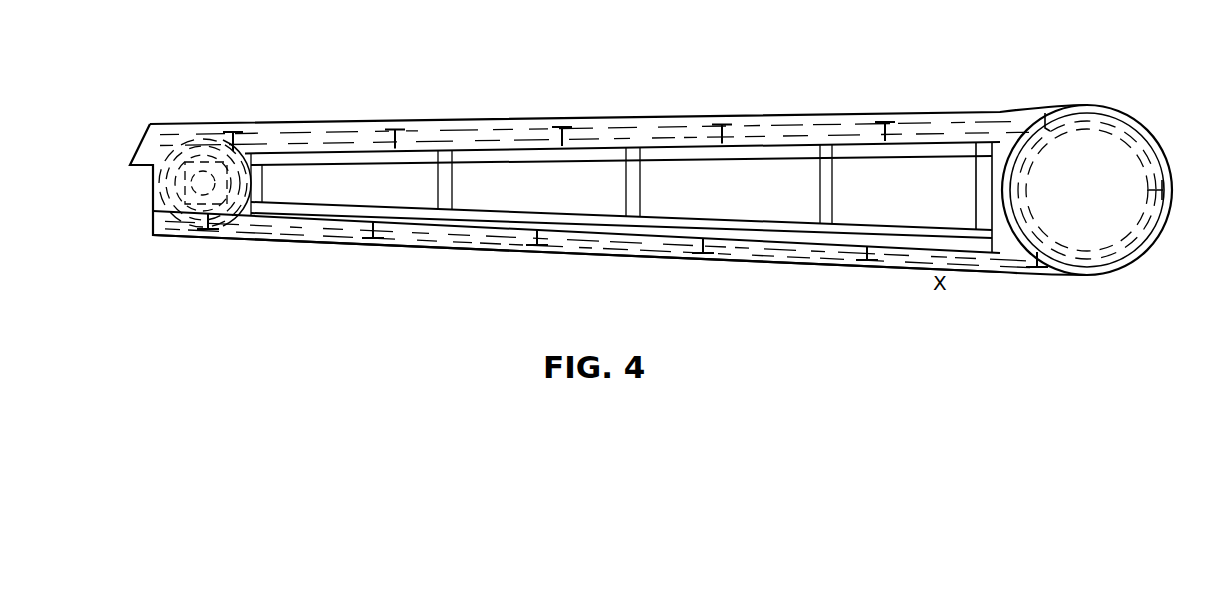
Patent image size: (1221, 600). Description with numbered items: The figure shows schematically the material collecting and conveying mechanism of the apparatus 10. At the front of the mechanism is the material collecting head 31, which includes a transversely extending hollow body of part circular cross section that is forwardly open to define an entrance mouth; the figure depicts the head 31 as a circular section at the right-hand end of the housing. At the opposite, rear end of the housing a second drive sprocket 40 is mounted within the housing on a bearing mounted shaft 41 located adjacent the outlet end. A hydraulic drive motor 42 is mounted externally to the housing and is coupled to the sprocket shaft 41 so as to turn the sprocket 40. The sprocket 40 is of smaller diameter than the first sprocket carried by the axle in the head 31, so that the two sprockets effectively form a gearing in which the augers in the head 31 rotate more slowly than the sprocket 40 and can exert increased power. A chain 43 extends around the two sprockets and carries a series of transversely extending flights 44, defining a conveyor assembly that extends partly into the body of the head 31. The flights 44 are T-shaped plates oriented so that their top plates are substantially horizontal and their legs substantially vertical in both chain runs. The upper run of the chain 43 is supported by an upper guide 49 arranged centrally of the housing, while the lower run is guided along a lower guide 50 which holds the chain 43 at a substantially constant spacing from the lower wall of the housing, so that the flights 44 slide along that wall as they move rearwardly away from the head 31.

The conveyor apparatus 10 is at (451, 106).
The material collecting head 31 is at (1161, 121).
The second drive sprocket 40 is at (177, 180).
The bearing mounted shaft 41 is at (207, 182).
The hydraulic drive motor 42 is at (200, 160).
The chain 43 is at (458, 237).
The flights 44 is at (677, 262).
The upper guide 49 is at (665, 148).
The lower guide 50 is at (772, 233).